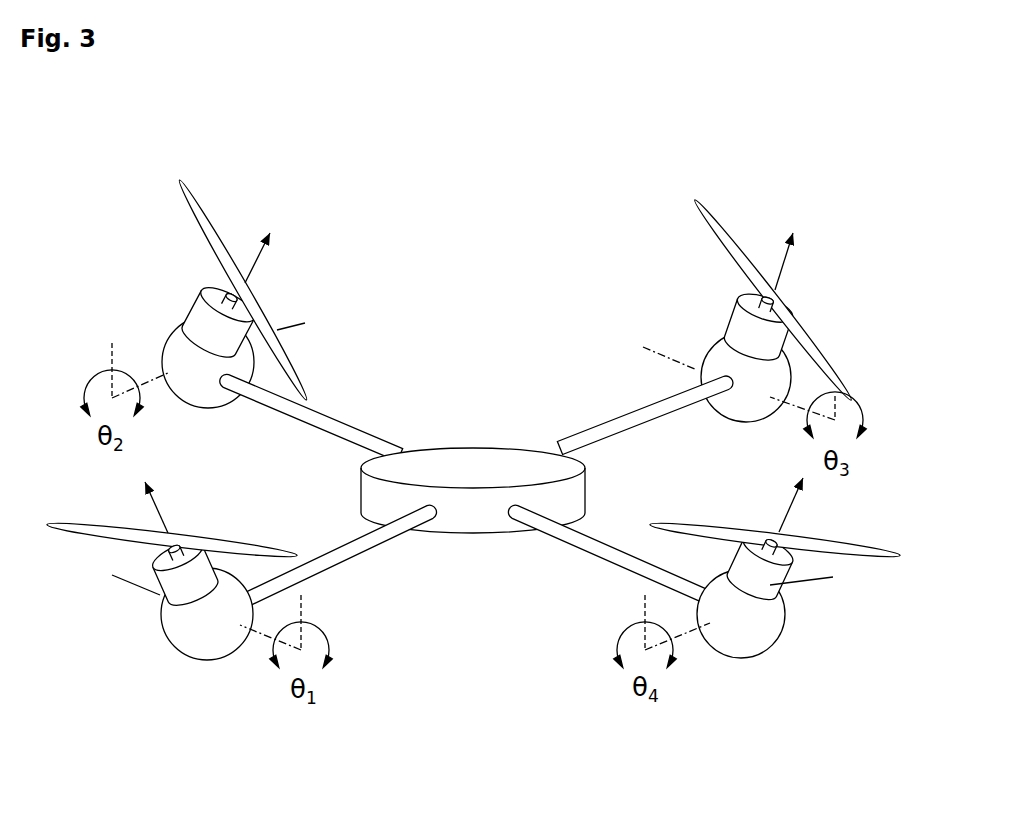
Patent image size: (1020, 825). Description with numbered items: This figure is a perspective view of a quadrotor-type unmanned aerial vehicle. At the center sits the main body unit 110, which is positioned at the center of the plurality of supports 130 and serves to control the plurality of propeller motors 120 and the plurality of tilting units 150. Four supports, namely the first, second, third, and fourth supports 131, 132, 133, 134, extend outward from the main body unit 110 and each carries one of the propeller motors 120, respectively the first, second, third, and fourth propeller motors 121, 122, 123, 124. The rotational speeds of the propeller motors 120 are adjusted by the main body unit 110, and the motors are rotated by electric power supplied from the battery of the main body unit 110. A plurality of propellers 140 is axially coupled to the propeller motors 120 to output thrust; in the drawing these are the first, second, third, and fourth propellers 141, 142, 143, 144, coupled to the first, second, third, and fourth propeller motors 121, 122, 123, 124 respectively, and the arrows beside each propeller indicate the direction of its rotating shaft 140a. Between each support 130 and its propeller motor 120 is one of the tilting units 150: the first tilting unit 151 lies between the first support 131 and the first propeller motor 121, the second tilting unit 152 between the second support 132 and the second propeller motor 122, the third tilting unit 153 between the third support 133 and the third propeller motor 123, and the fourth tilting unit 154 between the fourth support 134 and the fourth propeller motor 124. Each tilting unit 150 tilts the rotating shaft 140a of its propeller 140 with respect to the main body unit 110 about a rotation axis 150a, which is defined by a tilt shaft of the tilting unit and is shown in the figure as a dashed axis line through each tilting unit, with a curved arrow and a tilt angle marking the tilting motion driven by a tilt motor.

The main body unit 110 is at (473, 458).
The propeller motors 120 is at (153, 595).
The first propeller motor 121 is at (133, 603).
The second propeller motor 122 is at (207, 307).
The third propeller motor 123 is at (737, 323).
The fourth propeller motor 124 is at (797, 595).
The supports 130 is at (385, 535).
The first support 131 is at (347, 558).
The second support 132 is at (362, 440).
The third support 133 is at (598, 437).
The fourth support 134 is at (565, 535).
The propellers 140 is at (243, 540).
The rotating shaft 140a is at (468, 386).
The first propeller 141 is at (173, 530).
The second propeller 142 is at (267, 317).
The third propeller 143 is at (813, 347).
The fourth propeller 144 is at (838, 545).
The tilting units 150 is at (173, 647).
The rotation axis 150a is at (150, 387).
The first tilting unit 151 is at (181, 664).
The second tilting unit 152 is at (175, 335).
The third tilting unit 153 is at (717, 352).
The fourth tilting unit 154 is at (755, 635).